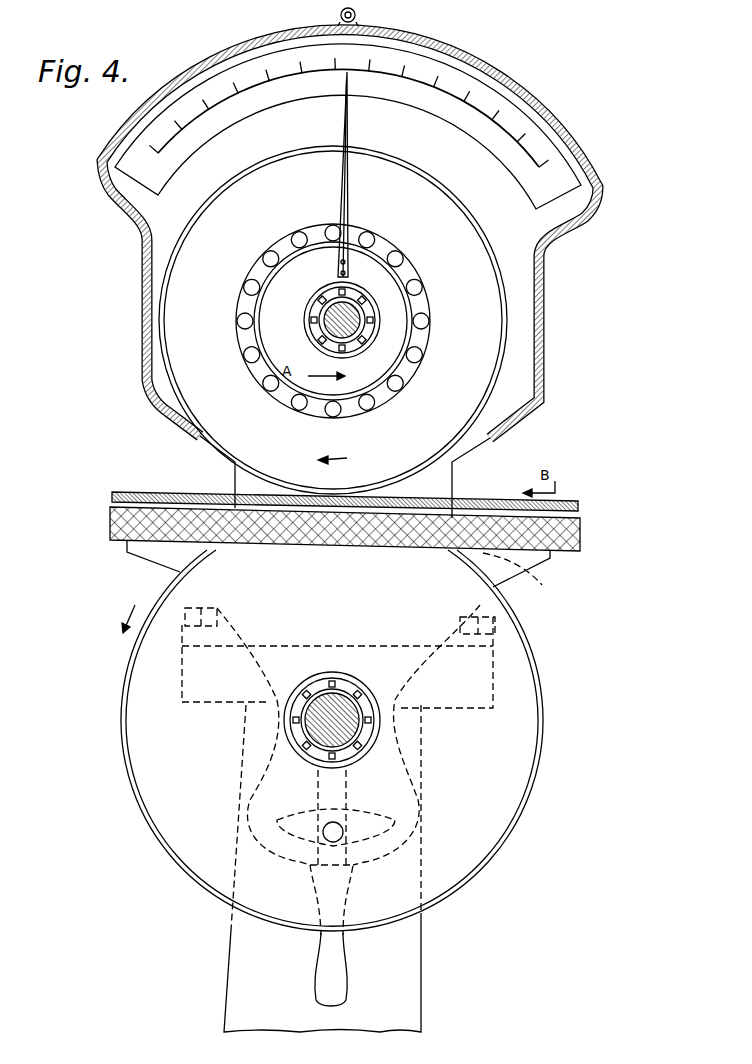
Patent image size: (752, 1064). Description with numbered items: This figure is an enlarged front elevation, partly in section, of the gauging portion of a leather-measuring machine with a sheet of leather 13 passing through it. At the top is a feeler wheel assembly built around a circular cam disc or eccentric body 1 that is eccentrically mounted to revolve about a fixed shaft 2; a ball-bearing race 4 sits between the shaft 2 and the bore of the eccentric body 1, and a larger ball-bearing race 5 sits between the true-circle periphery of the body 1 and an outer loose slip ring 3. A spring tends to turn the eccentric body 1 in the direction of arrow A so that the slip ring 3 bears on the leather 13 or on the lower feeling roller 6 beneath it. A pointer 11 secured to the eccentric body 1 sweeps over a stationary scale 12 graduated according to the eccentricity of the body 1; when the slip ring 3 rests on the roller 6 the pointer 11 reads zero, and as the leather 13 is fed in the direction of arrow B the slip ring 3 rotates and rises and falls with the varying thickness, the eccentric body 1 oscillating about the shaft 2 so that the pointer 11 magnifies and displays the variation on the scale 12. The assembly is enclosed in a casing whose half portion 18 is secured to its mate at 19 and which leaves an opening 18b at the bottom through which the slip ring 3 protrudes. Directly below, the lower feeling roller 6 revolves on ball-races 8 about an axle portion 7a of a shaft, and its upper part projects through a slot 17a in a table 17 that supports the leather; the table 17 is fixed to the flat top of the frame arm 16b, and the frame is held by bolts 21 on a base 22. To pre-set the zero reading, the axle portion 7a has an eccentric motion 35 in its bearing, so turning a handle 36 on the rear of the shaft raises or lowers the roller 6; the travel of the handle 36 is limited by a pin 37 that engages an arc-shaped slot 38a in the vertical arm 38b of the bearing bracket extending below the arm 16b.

The eccentric body 1 is at (283, 303).
The shaft 2 is at (360, 325).
The outer slip ring 3 is at (402, 174).
The ball-bearing race 4 is at (316, 333).
The ball-bearing race 5 is at (292, 399).
The lower feeling roller 6 is at (186, 872).
The axle portion 7a is at (313, 730).
The ball-races 8 is at (357, 631).
The pointer 11 is at (341, 181).
The scale 12 is at (200, 105).
The sheet of leather 13 is at (579, 504).
The arm extremity 16b is at (167, 551).
The table 17 is at (582, 537).
The slot 17a is at (527, 572).
The casing portion 18 is at (141, 381).
The opening 18b is at (472, 452).
The casing fastening 19 is at (356, 15).
The bolts 21 is at (495, 623).
The base 22 is at (422, 1007).
The eccentric motion 35 is at (300, 708).
The handle 36 is at (320, 976).
The pin 37 is at (325, 840).
The arc-shaped slot 38a is at (385, 822).
The vertical arm 38b is at (393, 763).